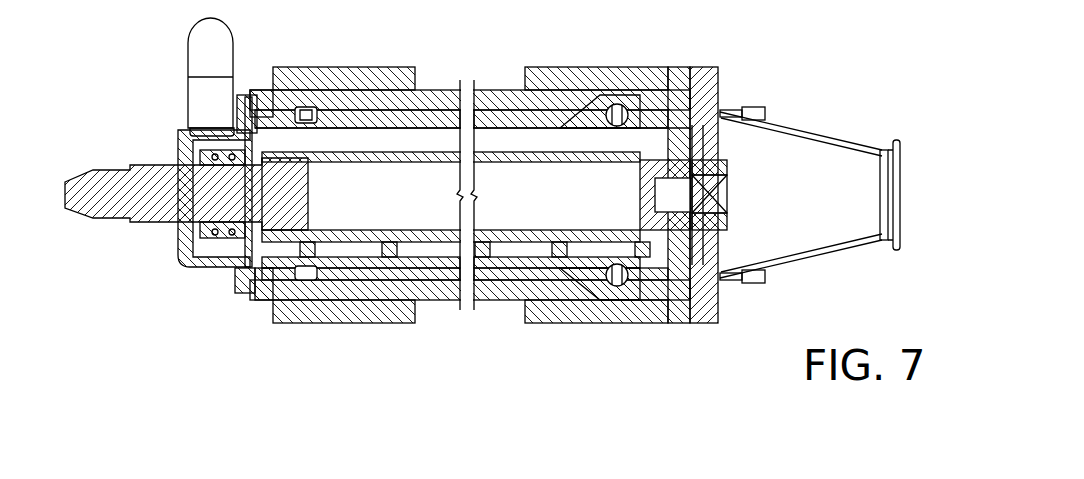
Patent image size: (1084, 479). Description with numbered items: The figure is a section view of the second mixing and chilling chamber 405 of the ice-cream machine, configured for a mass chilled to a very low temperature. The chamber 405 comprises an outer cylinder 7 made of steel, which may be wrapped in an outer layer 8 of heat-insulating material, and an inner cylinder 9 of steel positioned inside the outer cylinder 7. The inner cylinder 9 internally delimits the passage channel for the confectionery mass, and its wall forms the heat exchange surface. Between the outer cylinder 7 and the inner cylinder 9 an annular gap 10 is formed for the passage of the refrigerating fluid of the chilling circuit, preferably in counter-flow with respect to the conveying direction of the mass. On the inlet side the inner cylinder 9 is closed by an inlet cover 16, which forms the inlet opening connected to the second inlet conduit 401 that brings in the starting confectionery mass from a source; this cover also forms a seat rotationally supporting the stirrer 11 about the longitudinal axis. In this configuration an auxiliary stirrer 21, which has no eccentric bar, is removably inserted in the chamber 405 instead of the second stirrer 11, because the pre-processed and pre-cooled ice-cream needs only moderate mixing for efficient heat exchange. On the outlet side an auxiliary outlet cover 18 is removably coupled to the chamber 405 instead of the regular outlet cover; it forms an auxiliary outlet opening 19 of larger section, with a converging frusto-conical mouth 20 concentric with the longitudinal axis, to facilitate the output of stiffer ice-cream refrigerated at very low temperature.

The outer cylinder 7 is at (403, 117).
The outer layer 8 is at (440, 102).
The inner cylinder 9 is at (355, 152).
The annular gap 10 is at (508, 118).
The stirrer 11 is at (525, 237).
The inlet cover 16 is at (210, 261).
The auxiliary outlet cover 18 is at (688, 42).
The auxiliary outlet opening 19 is at (895, 187).
The cone 20 is at (810, 258).
The auxiliary stirrer 21 is at (446, 240).
The second inlet conduit 401 is at (198, 98).
The second mixing and chilling chamber 405 is at (660, 330).